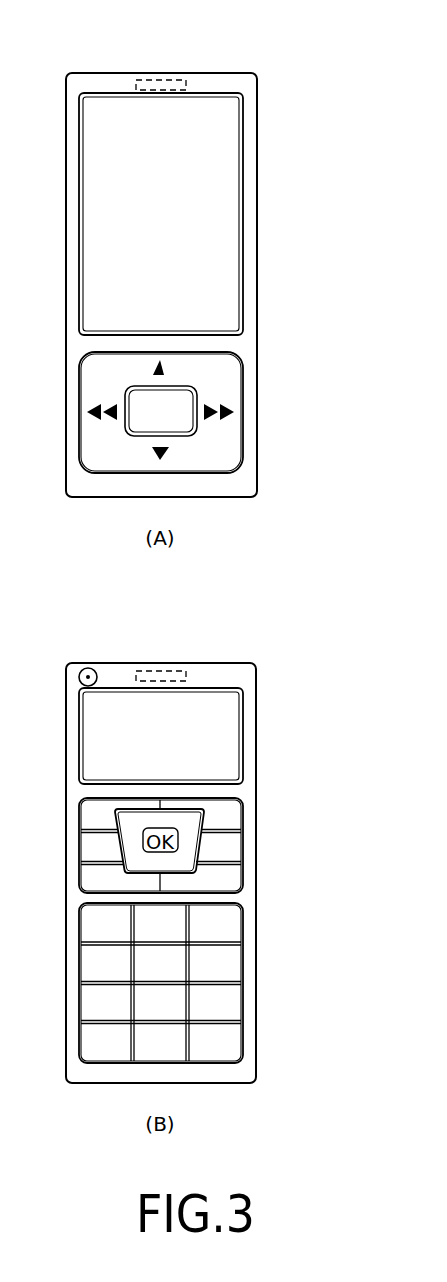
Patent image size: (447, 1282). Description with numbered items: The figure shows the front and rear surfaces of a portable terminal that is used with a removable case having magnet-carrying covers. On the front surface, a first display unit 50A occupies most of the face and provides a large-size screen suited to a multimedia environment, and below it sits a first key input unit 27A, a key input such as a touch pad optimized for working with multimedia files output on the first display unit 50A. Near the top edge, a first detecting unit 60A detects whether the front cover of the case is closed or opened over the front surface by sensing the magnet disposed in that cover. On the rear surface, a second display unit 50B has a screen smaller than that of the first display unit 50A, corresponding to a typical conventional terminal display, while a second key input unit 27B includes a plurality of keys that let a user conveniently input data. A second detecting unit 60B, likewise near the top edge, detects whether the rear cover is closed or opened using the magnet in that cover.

In FIG. 3A, the first display unit 50A is at (243, 216).
In FIG. 3A, the first detecting unit 60A is at (164, 79).
In FIG. 3A, the first key input unit 27A is at (243, 397).
In FIG. 3B, the second display unit 50B is at (243, 734).
In FIG. 3B, the second detecting unit 60B is at (164, 670).
In FIG. 3B, the second key input unit 27B is at (243, 944).